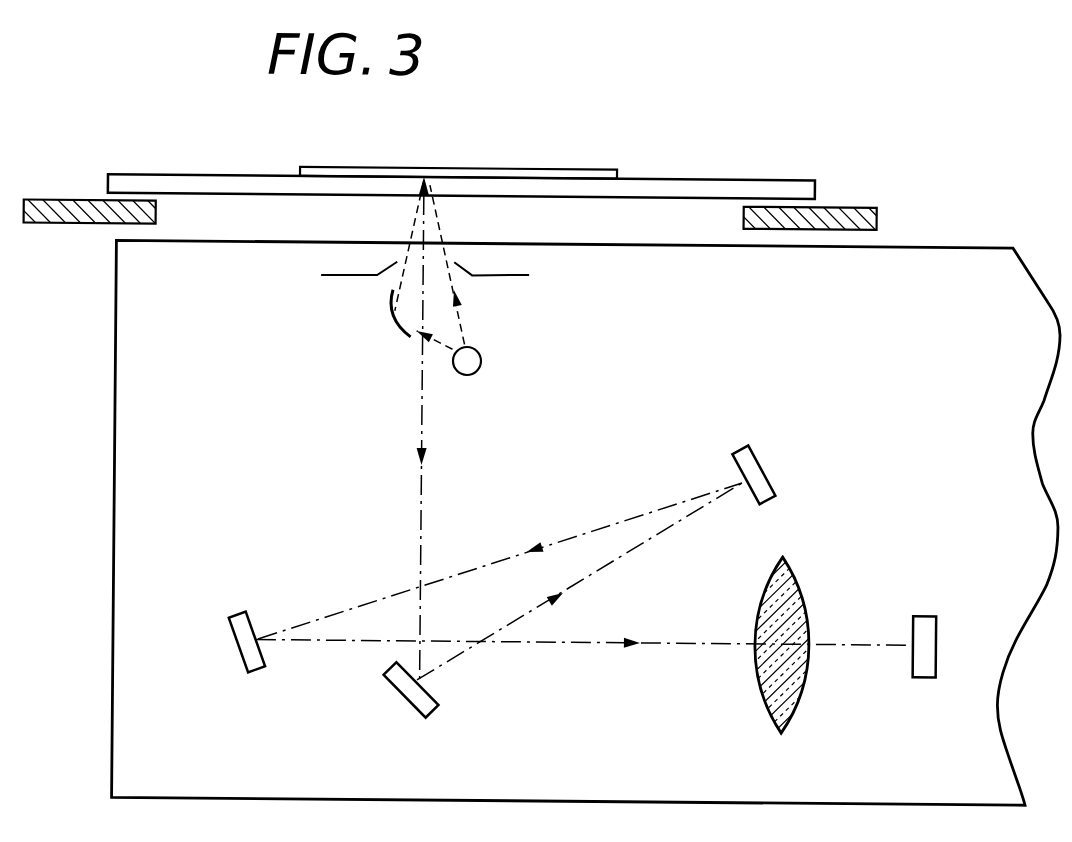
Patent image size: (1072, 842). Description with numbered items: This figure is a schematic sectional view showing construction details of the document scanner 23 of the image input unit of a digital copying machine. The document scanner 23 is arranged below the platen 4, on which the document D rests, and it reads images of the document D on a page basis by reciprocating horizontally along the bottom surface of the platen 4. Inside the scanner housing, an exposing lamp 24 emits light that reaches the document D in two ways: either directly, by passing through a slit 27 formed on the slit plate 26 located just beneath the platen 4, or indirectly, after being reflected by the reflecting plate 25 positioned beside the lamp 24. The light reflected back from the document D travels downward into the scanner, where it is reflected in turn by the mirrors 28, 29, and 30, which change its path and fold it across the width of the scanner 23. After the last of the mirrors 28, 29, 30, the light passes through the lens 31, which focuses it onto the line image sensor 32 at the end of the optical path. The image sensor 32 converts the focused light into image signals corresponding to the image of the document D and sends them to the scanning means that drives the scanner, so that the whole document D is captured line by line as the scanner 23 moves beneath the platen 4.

The document D is at (497, 166).
The platen 4 is at (268, 198).
The document scanner 23 is at (639, 380).
The exposing lamp 24 is at (484, 360).
The reflecting plate 25 is at (398, 328).
The slit plate 26 is at (334, 276).
The slit 27 is at (418, 248).
The mirror 28 is at (408, 704).
The mirror 29 is at (766, 457).
The mirror 30 is at (232, 642).
The lens 31 is at (798, 574).
The line image sensor 32 is at (934, 612).